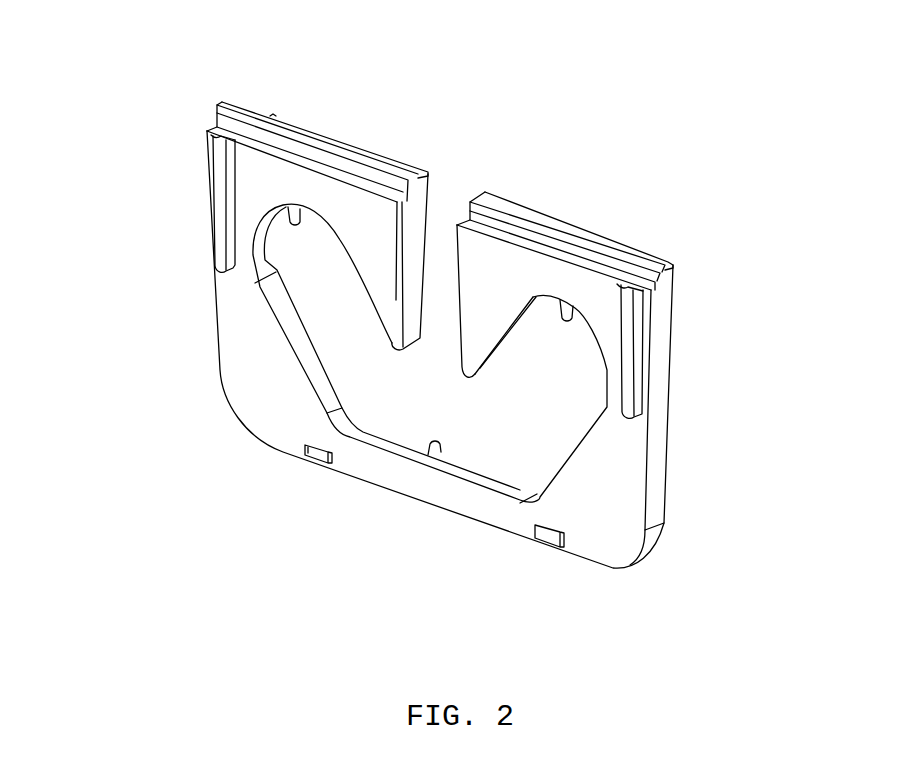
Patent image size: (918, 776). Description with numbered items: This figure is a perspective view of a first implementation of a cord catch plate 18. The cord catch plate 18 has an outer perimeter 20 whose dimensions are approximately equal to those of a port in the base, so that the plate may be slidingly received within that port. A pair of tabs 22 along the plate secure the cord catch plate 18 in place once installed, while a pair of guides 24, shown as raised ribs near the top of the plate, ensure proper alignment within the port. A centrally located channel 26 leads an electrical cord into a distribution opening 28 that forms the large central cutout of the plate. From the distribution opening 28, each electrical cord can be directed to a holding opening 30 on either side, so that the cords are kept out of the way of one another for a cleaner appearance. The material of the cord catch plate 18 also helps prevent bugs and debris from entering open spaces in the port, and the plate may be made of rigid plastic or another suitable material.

The cord catch plate 18 is at (651, 584).
The outer perimeter 20 is at (215, 332).
The tabs 22 is at (307, 458).
The guides 24 is at (222, 187).
The channel 26 is at (411, 217).
The distribution opening 28 is at (432, 447).
The holding opening 30 is at (297, 207).